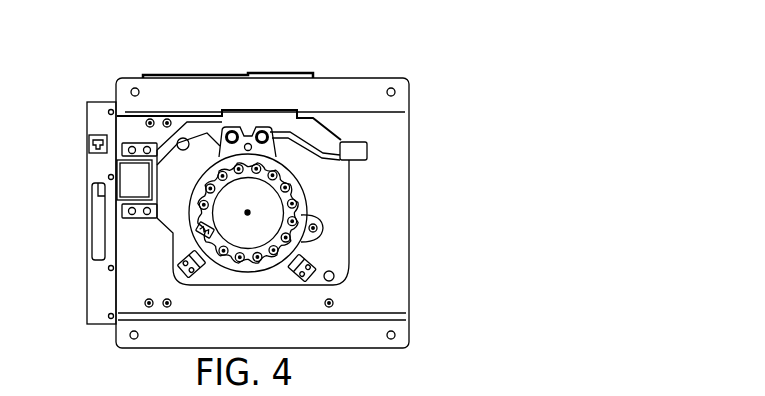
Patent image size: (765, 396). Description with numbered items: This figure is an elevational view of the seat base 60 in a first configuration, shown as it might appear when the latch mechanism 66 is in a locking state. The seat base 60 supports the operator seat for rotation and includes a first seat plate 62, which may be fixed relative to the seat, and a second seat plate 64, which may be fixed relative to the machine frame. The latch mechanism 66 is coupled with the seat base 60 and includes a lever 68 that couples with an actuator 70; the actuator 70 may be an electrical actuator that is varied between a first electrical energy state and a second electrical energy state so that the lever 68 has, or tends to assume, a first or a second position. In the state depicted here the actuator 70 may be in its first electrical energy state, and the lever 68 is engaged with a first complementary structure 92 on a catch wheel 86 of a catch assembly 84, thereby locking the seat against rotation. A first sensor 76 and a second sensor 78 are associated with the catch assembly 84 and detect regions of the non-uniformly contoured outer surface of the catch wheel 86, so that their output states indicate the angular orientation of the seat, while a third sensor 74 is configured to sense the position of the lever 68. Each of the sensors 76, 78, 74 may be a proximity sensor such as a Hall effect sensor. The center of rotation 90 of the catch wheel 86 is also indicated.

The seat base 60 is at (430, 96).
The first seat plate 62 is at (116, 79).
The second seat plate 64 is at (90, 300).
The latch mechanism 66 is at (237, 120).
The lever 68 is at (192, 116).
The actuator 70 is at (120, 167).
The third sensor 74 is at (356, 141).
The first sensor 76 is at (295, 282).
The second sensor 78 is at (205, 279).
The catch assembly 84 is at (184, 186).
The catch wheel 86 is at (303, 186).
The rotor axis 90 is at (250, 206).
The first complementary structure 92 is at (247, 129).